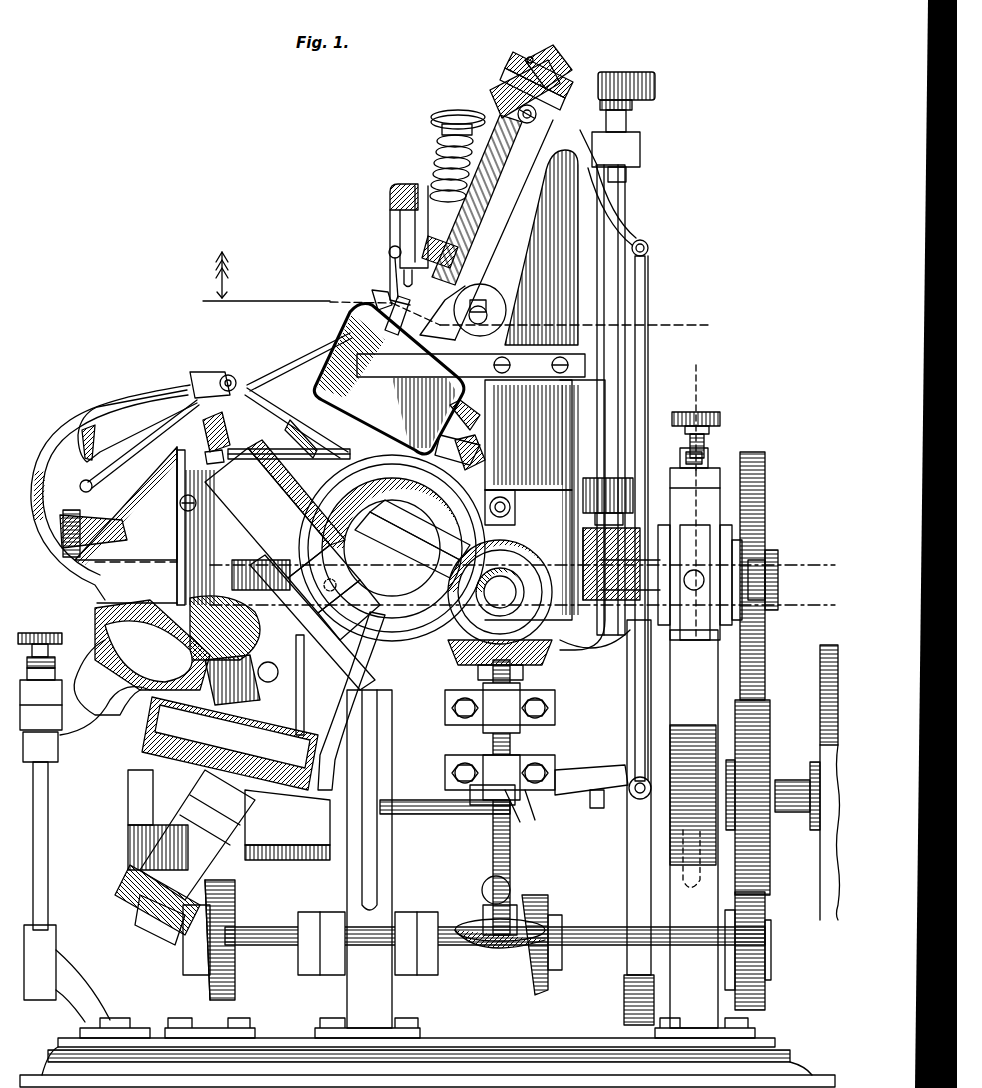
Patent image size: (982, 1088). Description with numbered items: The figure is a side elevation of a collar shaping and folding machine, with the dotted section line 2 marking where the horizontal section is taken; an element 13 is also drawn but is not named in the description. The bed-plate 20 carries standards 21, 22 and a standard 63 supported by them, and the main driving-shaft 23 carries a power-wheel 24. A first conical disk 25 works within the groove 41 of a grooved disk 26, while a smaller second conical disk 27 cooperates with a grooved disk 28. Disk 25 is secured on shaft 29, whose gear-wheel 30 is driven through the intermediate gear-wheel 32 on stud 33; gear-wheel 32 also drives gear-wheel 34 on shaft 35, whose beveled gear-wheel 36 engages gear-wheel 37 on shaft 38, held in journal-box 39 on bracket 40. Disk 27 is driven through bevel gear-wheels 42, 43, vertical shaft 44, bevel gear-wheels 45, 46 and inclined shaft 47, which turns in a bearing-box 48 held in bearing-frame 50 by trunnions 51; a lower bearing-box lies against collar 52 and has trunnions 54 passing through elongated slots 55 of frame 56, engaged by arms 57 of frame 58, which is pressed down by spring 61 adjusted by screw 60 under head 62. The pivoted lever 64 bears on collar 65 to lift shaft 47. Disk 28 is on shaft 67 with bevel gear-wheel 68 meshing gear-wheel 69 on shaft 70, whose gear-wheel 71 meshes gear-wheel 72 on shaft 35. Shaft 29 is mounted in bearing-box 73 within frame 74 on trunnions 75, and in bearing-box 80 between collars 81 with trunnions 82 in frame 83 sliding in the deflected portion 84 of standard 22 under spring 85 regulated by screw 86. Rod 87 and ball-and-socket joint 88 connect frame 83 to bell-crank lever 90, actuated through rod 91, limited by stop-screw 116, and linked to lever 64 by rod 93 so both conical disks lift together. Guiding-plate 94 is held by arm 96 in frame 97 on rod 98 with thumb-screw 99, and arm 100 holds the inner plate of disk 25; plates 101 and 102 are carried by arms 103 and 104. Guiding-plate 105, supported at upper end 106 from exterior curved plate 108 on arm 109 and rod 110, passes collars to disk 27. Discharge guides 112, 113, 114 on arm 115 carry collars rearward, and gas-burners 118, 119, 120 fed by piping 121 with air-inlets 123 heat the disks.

The section line 2 is at (452, 293).
The shaft 13 is at (690, 720).
The bed-plate 20 is at (445, 1040).
The standard 21 is at (694, 829).
The standard 22 is at (369, 859).
The main driving-shaft 23 is at (470, 805).
The power-wheel 24 is at (822, 644).
The first conical disk 25 is at (126, 526).
The grooved disk 26 is at (150, 730).
The second conical disk 27 is at (298, 395).
The grooved disk 28 is at (365, 455).
The shaft 29 is at (780, 578).
The gear-wheel 30 is at (766, 516).
The intermediate gear-wheel 32 is at (770, 750).
The stud 33 is at (730, 775).
The gear-wheel 34 is at (767, 982).
The shaft 35 is at (262, 928).
The beveled gear-wheel 36 is at (232, 985).
The beveled gear-wheel 37 is at (130, 866).
The shaft 38 is at (155, 903).
The journal-box 39 is at (165, 808).
The bracket 40 is at (287, 840).
The groove 41 is at (250, 812).
The bevel gear-wheel 42 is at (621, 577).
The bevel gear-wheel 43 is at (630, 500).
The vertical shaft 44 is at (630, 365).
The bevel gear-wheel 45 is at (660, 84).
The bevel gear-wheel 46 is at (530, 58).
The shaft 47 is at (565, 60).
The bearing-box 48 is at (520, 80).
The bearing-frame 50 is at (495, 95).
The trunnions or screws 51 is at (540, 120).
The collar 52 is at (375, 296).
The pins or trunnions 54 is at (389, 254).
The elongated slots 55 is at (404, 278).
The frame 56 is at (402, 312).
The arms 57 is at (393, 226).
The frame 58 is at (390, 195).
The screw 60 is at (440, 130).
The spring 61 is at (434, 161).
The head 62 is at (444, 113).
The standard 63 is at (481, 385).
The pivoted lever 64 is at (625, 212).
The collar 65 is at (522, 105).
The shaft 67 is at (525, 600).
The bevel gear-wheel 68 is at (520, 565).
The bevel gear-wheel 69 is at (525, 648).
The shaft 70 is at (520, 722).
The bevel gear-wheel 71 is at (535, 895).
The bevel gear-wheel 72 is at (540, 995).
The bearing-box 73 is at (628, 640).
The frame 74 is at (678, 555).
The trunnions or pins 75 is at (700, 575).
The bearing-box 80 is at (295, 505).
The collars 81 is at (261, 574).
The trunnions or pins 82 is at (336, 609).
The frame 83 is at (324, 579).
The upper deflected portion 84 is at (267, 513).
The spring 85 is at (225, 628).
The screw 86 is at (222, 442).
The inclined rod 87 is at (480, 806).
The ball-and-socket joint 88 is at (484, 886).
The bell-crank lever 90 is at (525, 822).
The rod 91 is at (634, 878).
The rod 93 is at (650, 248).
The guiding-plate 94 is at (152, 645).
The arm 96 is at (105, 687).
The frame 97 is at (58, 735).
The vertical rod 98 is at (50, 825).
The thumb-screw 99 is at (40, 632).
The arm 100 is at (192, 520).
The inner guiding-plate 101 is at (310, 452).
The outer guiding-plate 102 is at (389, 379).
The arm 103 is at (289, 442).
The arm 104 is at (463, 320).
The guiding-plate 105 is at (295, 420).
The upper end 106 is at (190, 496).
The exterior curved plate 108 is at (342, 552).
The arm 109 is at (461, 444).
The vertical rod 110 is at (313, 685).
The guide 112 is at (138, 441).
The trough-like guide 113 is at (93, 528).
The trough-like guide 114 is at (487, 458).
The arm 115 is at (108, 492).
The adjustable stop-screw 116 is at (598, 808).
The gas-burner 118 is at (237, 377).
The gas-burner 119 is at (412, 543).
The gas-burner 120 is at (287, 817).
The piping 121 is at (351, 701).
The air-inlets 123 is at (208, 372).